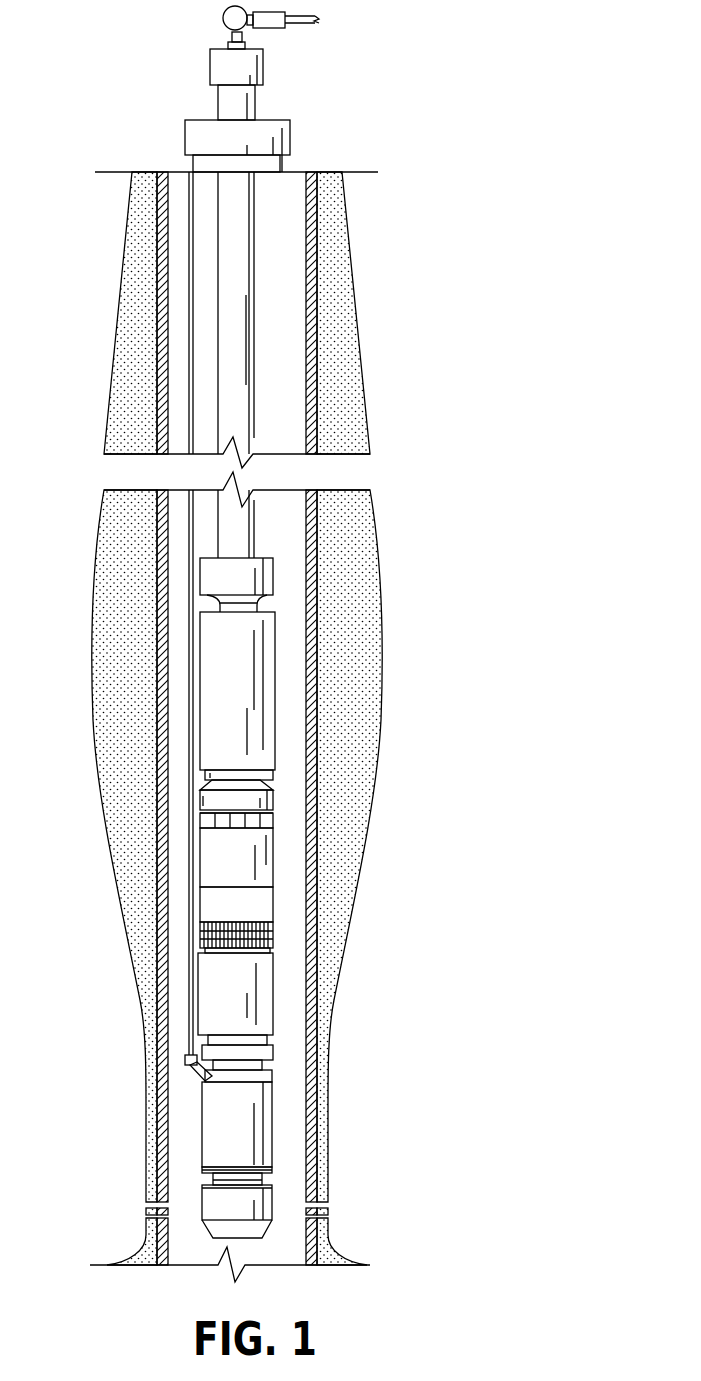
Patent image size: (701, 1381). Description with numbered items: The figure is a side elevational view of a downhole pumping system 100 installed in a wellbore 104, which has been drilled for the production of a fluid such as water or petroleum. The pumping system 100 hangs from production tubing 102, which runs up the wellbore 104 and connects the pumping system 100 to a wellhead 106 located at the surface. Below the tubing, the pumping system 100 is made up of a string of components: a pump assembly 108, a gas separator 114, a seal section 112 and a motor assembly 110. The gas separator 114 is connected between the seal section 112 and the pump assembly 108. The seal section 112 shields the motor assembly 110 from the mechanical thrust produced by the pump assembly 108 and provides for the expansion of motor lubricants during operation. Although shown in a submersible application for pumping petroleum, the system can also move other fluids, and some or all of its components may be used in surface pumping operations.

The pumping system 100 is at (352, 898).
The production tubing 102 is at (247, 218).
The wellbore 104 is at (310, 287).
The wellhead 106 is at (225, 67).
The pump assembly 108 is at (270, 735).
The motor assembly 110 is at (267, 1133).
The seal section 112 is at (275, 970).
The gas separator 114 is at (275, 872).